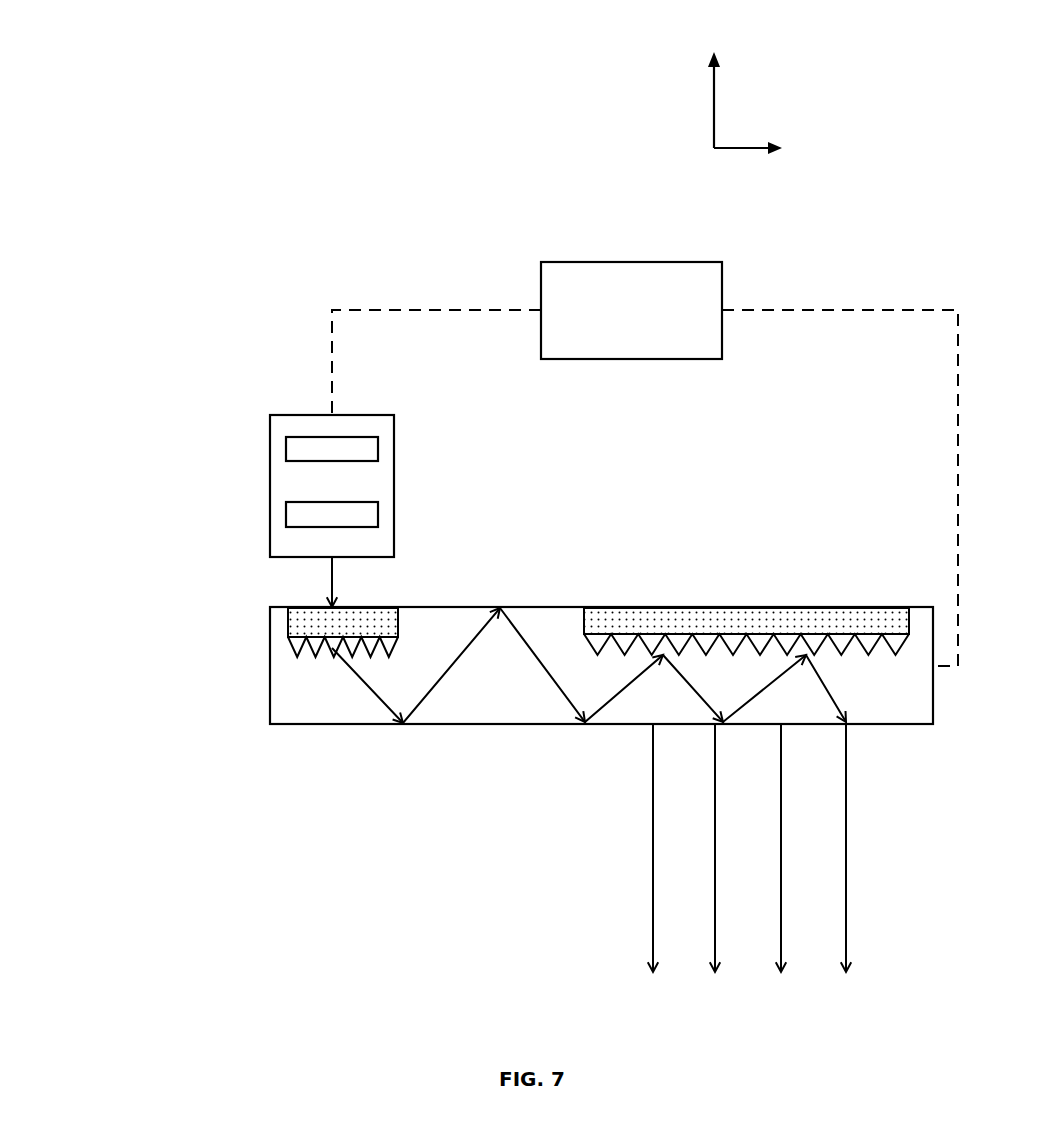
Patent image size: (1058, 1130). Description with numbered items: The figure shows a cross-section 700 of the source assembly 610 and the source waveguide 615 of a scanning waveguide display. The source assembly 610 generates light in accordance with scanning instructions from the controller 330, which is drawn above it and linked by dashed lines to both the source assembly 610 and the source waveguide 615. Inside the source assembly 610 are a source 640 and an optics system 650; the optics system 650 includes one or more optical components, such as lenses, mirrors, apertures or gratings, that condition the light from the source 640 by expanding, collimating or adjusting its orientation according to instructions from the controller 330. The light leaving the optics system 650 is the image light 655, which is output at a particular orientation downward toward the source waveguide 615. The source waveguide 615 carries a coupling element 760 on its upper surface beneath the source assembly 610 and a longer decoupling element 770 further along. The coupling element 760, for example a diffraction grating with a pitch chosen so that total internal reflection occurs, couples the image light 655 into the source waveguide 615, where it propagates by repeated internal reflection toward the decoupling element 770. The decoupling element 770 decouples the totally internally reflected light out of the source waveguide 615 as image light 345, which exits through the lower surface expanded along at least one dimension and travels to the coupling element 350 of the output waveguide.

The cross-section 700 is at (502, 551).
The controller 330 is at (645, 464).
The source assembly 610 is at (270, 428).
The source 640 is at (394, 453).
The optics system 650 is at (394, 521).
The image light 655 is at (332, 590).
The source waveguide 615 is at (270, 674).
The coupling element 760 is at (288, 625).
The decoupling element 770 is at (770, 622).
The image light 345 is at (653, 866).
The coupling element 350 is at (773, 1058).